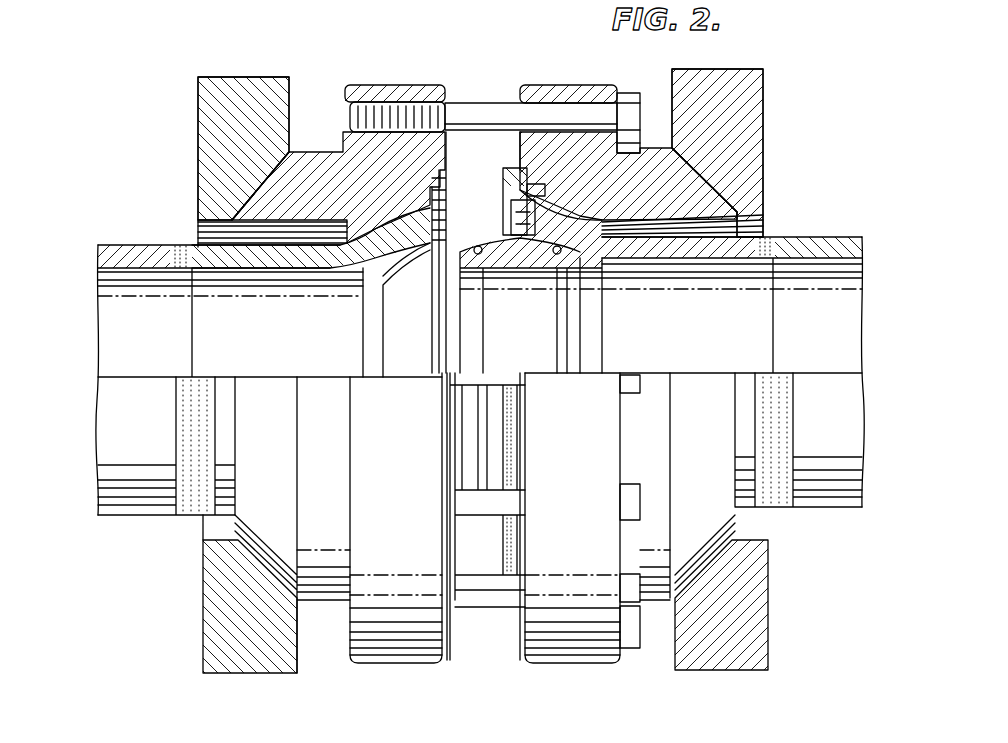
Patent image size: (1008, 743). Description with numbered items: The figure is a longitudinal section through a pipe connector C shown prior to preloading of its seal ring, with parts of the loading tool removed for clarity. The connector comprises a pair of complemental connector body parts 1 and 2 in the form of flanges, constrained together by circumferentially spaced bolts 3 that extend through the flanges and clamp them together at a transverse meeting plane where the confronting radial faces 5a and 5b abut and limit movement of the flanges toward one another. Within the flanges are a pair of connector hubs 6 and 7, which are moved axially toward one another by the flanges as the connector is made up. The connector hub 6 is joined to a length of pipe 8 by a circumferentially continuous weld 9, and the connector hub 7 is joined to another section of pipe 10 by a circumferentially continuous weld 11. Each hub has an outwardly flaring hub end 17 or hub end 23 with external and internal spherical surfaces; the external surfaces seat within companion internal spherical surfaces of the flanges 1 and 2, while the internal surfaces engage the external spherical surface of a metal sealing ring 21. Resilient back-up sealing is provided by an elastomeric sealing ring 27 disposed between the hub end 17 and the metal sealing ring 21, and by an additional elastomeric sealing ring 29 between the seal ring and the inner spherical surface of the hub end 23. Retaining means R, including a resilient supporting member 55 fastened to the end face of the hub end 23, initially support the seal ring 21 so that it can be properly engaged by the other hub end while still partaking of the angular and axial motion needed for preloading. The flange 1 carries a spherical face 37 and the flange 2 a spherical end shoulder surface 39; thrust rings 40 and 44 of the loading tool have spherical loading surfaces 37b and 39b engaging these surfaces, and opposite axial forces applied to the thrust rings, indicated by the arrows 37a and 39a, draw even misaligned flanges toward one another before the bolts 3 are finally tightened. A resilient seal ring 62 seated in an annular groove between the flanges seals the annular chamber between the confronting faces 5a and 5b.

The connector body part 1 is at (340, 59).
The connector body part 2 is at (550, 82).
The bolt 3 is at (483, 105).
The pipe connector C is at (412, 83).
The radial face 5a is at (445, 436).
The radial face 5b is at (517, 432).
The connector hub 6 is at (268, 258).
The connector hub 7 is at (712, 252).
The pipe 8 is at (112, 452).
The weld 9 is at (195, 500).
The pipe 10 is at (848, 507).
The weld 11 is at (780, 507).
The hub end 17 is at (360, 206).
The metal sealing ring 21 is at (522, 270).
The hub end 23 is at (592, 220).
The elastomeric sealing ring 27 is at (477, 247).
The elastomeric sealing ring 29 is at (556, 247).
The spherical face 37 is at (262, 178).
The arrow 37a is at (113, 85).
The spherical loading surface 37b is at (250, 200).
The end shoulder surface 39 is at (708, 180).
The arrow 39a is at (840, 67).
The spherical loading surface 39b is at (712, 205).
The thrust ring 40 is at (205, 152).
The thrust ring 44 is at (760, 132).
The resilient supporting member 55 is at (508, 212).
The resilient seal ring 62 is at (510, 175).
The retaining means R is at (505, 192).